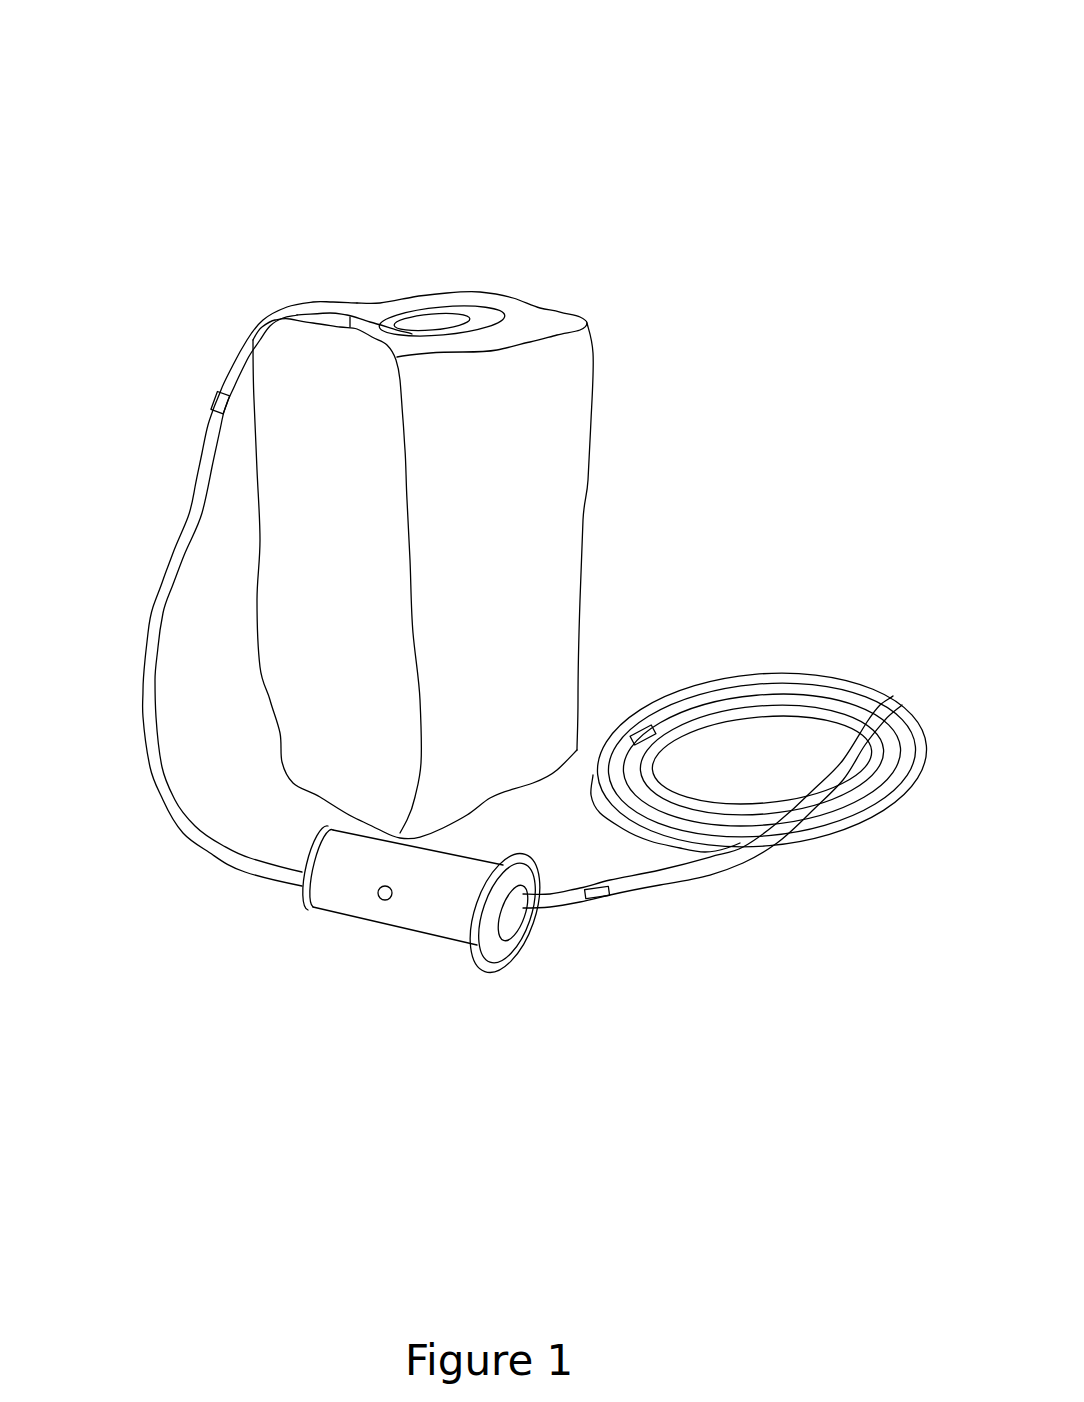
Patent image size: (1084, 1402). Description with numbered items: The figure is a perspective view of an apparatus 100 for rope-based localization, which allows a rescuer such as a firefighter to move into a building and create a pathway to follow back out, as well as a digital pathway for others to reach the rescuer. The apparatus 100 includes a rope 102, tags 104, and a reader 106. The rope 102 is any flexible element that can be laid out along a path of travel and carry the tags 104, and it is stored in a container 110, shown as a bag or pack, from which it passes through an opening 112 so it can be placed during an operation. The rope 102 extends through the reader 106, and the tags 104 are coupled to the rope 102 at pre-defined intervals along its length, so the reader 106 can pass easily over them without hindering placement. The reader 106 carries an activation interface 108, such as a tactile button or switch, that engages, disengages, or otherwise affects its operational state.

The apparatus 100 is at (186, 62).
The rope 102 is at (840, 690).
The tag 104 is at (212, 400).
The reader 106 is at (326, 913).
The activation interface 108 is at (384, 901).
The container 110 is at (598, 409).
The opening 112 is at (451, 315).